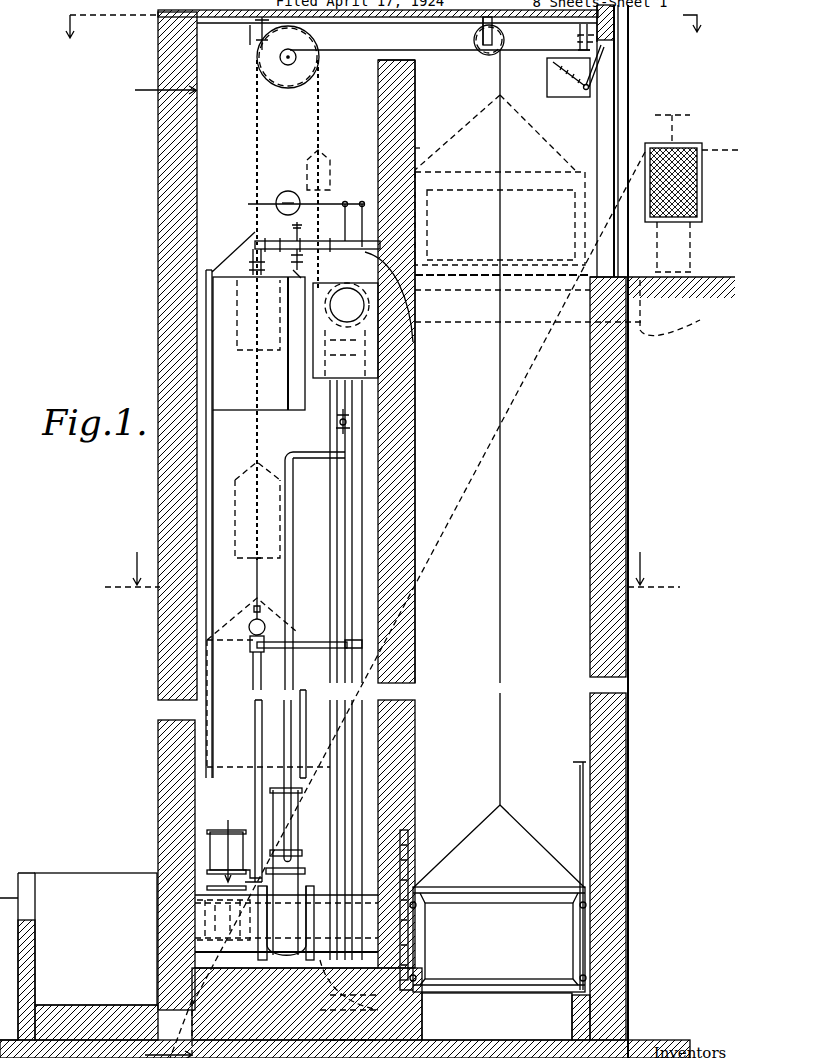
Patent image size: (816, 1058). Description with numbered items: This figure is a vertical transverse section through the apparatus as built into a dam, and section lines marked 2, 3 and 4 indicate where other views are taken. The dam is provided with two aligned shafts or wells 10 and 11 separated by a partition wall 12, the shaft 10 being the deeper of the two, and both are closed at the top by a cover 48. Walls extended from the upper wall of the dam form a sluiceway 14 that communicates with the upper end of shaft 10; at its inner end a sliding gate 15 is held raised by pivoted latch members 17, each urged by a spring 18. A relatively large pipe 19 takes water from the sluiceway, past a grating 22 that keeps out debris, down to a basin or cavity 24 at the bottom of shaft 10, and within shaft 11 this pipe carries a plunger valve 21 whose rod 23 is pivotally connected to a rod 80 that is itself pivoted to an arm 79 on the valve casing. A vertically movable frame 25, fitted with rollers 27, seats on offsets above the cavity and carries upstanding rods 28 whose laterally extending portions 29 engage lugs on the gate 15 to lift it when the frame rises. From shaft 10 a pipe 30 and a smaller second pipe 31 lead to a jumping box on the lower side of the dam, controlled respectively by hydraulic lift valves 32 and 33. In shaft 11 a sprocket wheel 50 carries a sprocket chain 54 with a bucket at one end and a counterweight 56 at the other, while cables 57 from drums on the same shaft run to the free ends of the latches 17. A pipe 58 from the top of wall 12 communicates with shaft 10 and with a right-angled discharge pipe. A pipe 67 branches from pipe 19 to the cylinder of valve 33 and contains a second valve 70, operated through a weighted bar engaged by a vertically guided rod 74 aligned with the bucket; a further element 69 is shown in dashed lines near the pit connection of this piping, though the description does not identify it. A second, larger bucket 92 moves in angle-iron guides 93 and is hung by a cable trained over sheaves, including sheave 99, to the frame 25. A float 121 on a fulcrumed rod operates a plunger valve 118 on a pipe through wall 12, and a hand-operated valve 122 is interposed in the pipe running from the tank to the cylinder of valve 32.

The section line 2- 2 is at (154, 567).
The section line 3- 3 is at (380, 41).
The section line 4- 4 is at (392, 556).
The shaft or well 10 is at (484, 371).
The shaft or well 11 is at (268, 703).
The partition wall 12 is at (413, 437).
The sluiceway 14 is at (687, 125).
The gate 15 is at (615, 30).
The pivoted latch member 17 is at (598, 77).
The spring 18 is at (568, 80).
The pipe 19 is at (418, 556).
The valve 21 is at (330, 278).
The grating 22 is at (705, 172).
The plunger or rod 23 is at (340, 220).
The basin or cavity 24 is at (497, 1016).
The frame 25 is at (493, 886).
The rollers 27 is at (418, 910).
The upstanding rods 28 is at (580, 832).
The laterally extending portion 29 is at (596, 30).
The pipe 30 is at (322, 943).
The second pipe 31 is at (78, 956).
The hydraulic lift valve 32 is at (297, 862).
The hydraulic lift valve 33 is at (234, 843).
The cover or top 48 is at (392, 22).
The sprocket wheel 50 is at (297, 82).
The sprocket chain 54 is at (325, 102).
The counterweight 56 is at (332, 162).
The cable 57 is at (444, 50).
The pipe 58 is at (415, 224).
The pipe 67 is at (258, 742).
The pump suction 69 is at (287, 970).
The second valve 70 is at (256, 652).
The rod 74 is at (256, 607).
The arm 79 is at (415, 150).
The rod 80 is at (362, 200).
The second bucket 92 is at (259, 405).
The guides 93 is at (213, 445).
The sheave 99 is at (487, 57).
The valve 118 is at (415, 340).
The float 121 is at (290, 585).
The hand-operated valve 122 is at (415, 388).